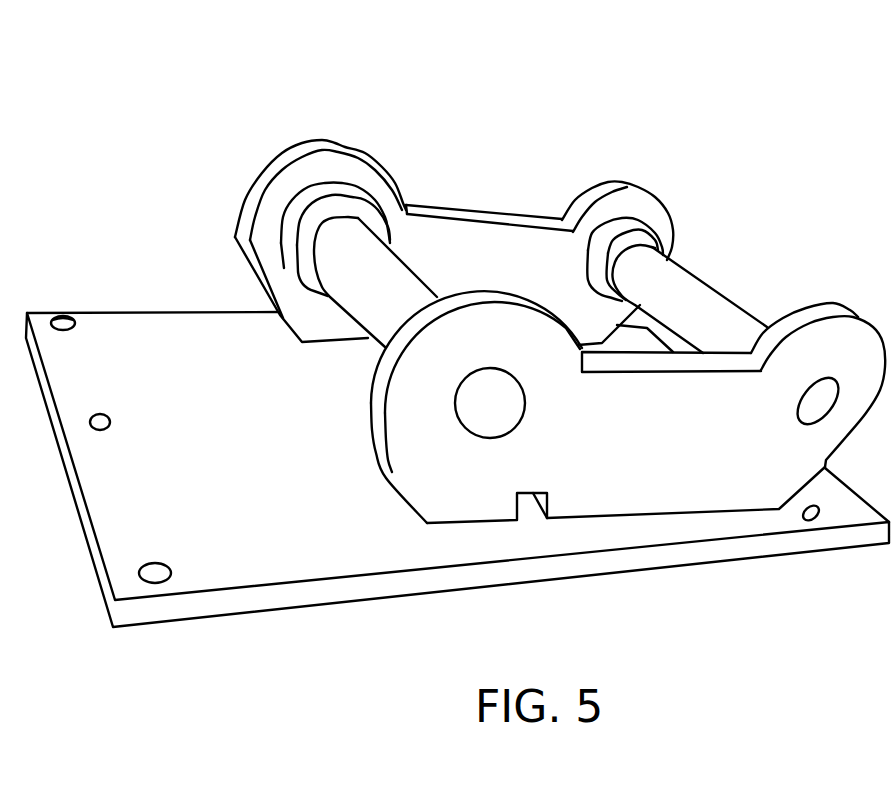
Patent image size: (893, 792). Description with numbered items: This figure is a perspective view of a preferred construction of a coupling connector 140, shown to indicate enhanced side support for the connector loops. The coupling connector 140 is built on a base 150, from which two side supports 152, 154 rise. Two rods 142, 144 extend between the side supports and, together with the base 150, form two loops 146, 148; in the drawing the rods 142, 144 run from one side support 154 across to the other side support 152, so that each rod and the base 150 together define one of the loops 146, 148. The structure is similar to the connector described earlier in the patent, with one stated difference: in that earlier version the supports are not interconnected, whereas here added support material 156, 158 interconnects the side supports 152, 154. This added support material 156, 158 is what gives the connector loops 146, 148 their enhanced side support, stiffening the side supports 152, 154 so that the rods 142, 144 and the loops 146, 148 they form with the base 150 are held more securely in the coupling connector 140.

The coupling connector 140 is at (734, 83).
The rod 142 is at (353, 300).
The rod 144 is at (668, 277).
The loop 146 is at (750, 272).
The loop 148 is at (352, 351).
The base 150 is at (357, 560).
The side support 152 is at (594, 533).
The side support 154 is at (495, 157).
The added support material 156 is at (497, 218).
The added support material 158 is at (670, 492).